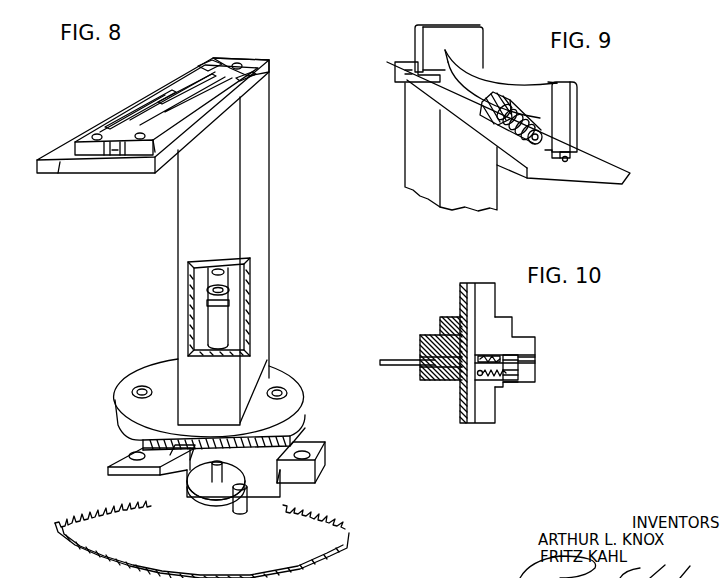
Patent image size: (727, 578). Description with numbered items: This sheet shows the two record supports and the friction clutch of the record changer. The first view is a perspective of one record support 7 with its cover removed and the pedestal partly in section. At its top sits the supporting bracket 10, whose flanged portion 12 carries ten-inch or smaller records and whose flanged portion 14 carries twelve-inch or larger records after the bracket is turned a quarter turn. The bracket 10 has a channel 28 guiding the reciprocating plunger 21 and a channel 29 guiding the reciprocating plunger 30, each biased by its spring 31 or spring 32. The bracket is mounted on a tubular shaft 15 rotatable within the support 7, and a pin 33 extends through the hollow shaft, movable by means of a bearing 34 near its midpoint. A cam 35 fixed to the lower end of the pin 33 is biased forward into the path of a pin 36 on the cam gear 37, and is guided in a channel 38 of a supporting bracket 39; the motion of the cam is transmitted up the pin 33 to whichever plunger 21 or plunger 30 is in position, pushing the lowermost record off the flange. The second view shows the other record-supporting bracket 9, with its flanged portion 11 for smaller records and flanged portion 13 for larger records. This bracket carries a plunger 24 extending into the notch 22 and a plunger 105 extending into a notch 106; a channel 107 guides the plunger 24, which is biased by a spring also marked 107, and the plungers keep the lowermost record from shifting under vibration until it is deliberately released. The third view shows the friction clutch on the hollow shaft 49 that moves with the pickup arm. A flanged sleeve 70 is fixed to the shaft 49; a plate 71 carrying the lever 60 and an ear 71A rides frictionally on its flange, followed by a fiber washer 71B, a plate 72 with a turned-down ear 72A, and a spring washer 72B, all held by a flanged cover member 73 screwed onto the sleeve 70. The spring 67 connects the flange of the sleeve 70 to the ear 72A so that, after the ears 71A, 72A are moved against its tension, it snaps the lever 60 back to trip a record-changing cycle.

In FIG. 8, the record support 7 is at (265, 178).
In FIG. 9, the supporting bracket 9 is at (418, 38).
In FIG. 8, the supporting bracket 10 is at (252, 62).
In FIG. 9, the flanged portion 11 is at (600, 170).
In FIG. 8, the flanged portion 12 is at (70, 160).
In FIG. 9, the flanged portion 13 is at (435, 97).
In FIG. 8, the flanged portion 14 is at (80, 136).
In FIG. 8, the tubular shaft 15 is at (205, 337).
In FIG. 8, the plunger 21 is at (110, 155).
In FIG. 9, the notch 22 is at (580, 158).
In FIG. 9, the plunger 24 is at (566, 162).
In FIG. 8, the channel 28 is at (128, 150).
In FIG. 8, the channel 29 is at (205, 65).
In FIG. 8, the plunger 30 is at (190, 76).
In FIG. 8, the spring 31 is at (110, 122).
In FIG. 8, the spring 32 is at (160, 90).
In FIG. 8, the pin 33 is at (252, 73).
In FIG. 8, the bearing 34 is at (212, 297).
In FIG. 8, the cam 35 is at (203, 492).
In FIG. 8, the pin 36 is at (248, 505).
In FIG. 8, the cam gear 37 is at (320, 535).
In FIG. 8, the channel 38 is at (185, 485).
In FIG. 8, the supporting bracket 39 is at (315, 463).
In FIG. 10, the hollow shaft 49 is at (462, 410).
In FIG. 10, the lever 60 is at (420, 362).
In FIG. 10, the spring 67 is at (505, 385).
In FIG. 10, the flanged sleeve 70 is at (440, 378).
In FIG. 10, the plate 71 is at (535, 366).
In FIG. 10, the ear 71A is at (500, 357).
In FIG. 10, the fiber washer 71B is at (430, 355).
In FIG. 10, the plate 72 is at (535, 360).
In FIG. 10, the turned-down ear 72A is at (515, 382).
In FIG. 10, the spring washer 72B is at (535, 355).
In FIG. 10, the flanged cover member 73 is at (440, 325).
In FIG. 9, the plunger 105 is at (410, 88).
In FIG. 9, the notch 106 is at (400, 73).
In FIG. 9, the channel 107 is at (520, 105).